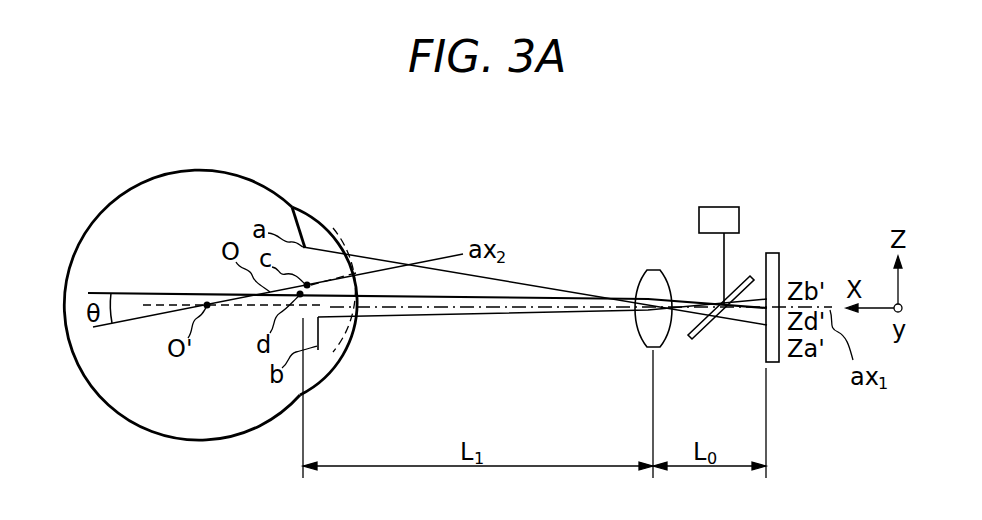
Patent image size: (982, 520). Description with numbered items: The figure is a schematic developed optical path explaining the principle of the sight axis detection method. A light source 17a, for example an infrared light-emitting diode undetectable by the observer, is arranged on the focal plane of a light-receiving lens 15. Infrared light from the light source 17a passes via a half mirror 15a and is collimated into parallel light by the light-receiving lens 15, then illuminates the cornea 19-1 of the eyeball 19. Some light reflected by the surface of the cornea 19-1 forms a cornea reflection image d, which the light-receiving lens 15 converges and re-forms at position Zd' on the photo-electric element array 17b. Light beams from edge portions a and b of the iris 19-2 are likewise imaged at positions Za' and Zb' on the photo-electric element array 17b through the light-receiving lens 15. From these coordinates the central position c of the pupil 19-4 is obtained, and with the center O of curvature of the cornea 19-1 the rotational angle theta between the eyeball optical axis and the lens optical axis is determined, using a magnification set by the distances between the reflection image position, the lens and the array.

The eyeball 19 is at (172, 169).
The cornea 19-1 is at (316, 214).
The iris 19-2 is at (299, 231).
The pupil 19-4 is at (323, 265).
The light-receiving lens 15 is at (657, 268).
The half mirror 15a is at (702, 328).
The light source 17a is at (727, 206).
The photo-electric element array 17b is at (778, 252).